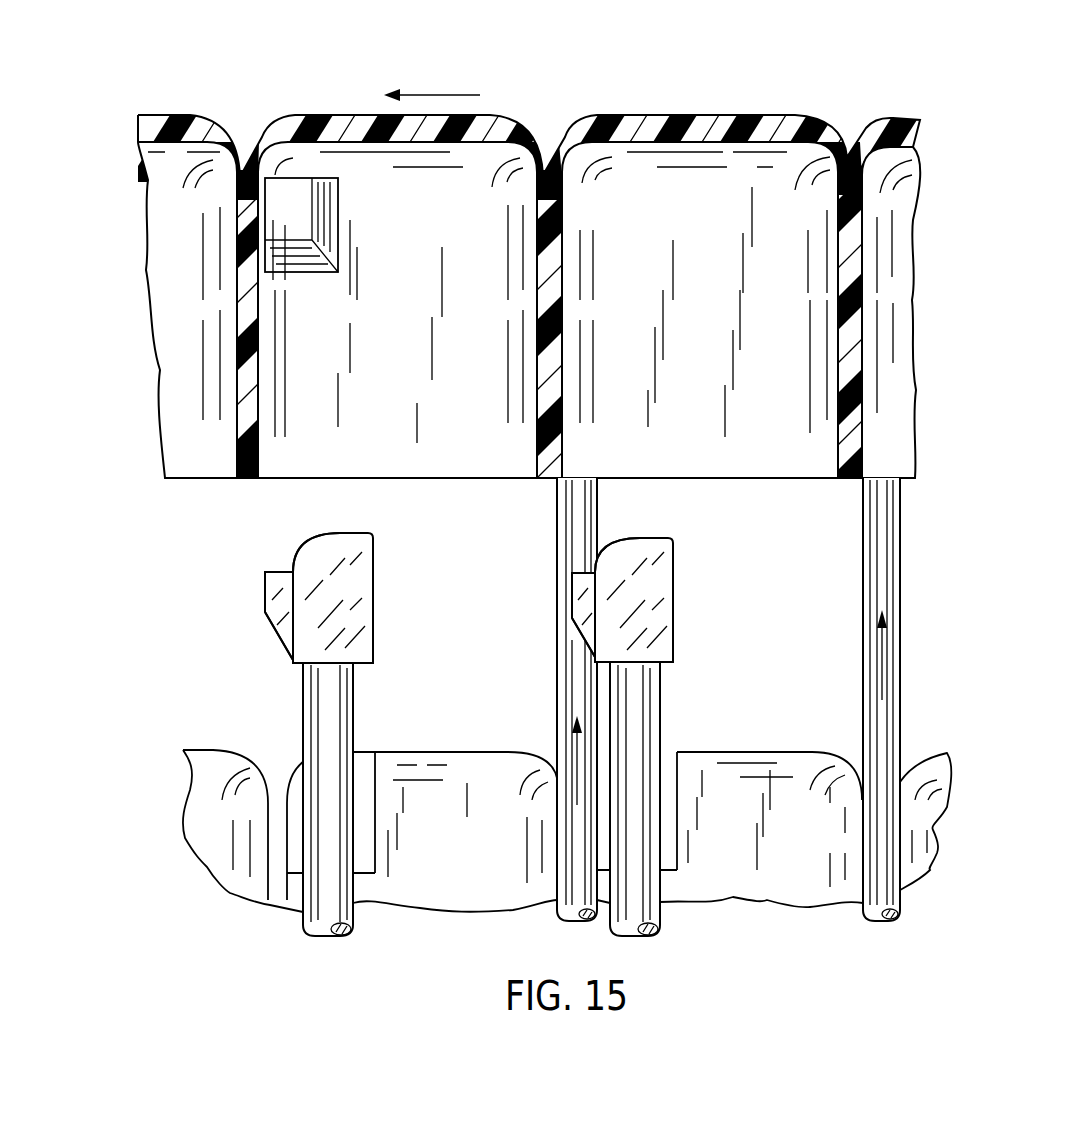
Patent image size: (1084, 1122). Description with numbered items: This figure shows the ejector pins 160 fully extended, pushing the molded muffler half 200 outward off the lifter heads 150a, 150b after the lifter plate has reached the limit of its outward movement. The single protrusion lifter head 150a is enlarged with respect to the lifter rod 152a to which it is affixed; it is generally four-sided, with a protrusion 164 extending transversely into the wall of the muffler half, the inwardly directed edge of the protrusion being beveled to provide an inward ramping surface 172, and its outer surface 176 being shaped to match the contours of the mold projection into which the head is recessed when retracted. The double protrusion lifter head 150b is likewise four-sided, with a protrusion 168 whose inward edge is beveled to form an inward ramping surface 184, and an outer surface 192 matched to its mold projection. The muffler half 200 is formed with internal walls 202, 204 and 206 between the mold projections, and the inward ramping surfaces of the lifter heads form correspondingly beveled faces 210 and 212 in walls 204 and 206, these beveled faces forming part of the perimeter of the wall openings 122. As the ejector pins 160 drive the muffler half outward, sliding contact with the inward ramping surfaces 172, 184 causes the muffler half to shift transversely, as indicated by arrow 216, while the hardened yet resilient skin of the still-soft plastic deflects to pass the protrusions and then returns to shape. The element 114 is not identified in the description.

The muffler half 200 is at (134, 116).
The arrow 216 is at (432, 82).
The wall openings 122 is at (236, 199).
The frame member 114 is at (240, 223).
The beveled face 210 is at (553, 258).
The internal wall 206 is at (410, 373).
The internal wall 204 is at (565, 448).
The internal wall 202 is at (258, 442).
The beveled face 212 is at (299, 274).
The ejector pins 160 is at (557, 507).
The double protrusion lifter head 150b is at (342, 719).
The protrusion 168 is at (265, 578).
The inward ramping surface 184 is at (278, 640).
The outer surface 192 is at (333, 533).
The lifter rod 152a is at (660, 724).
The single protrusion lifter head 150a is at (630, 592).
The protrusion 164 is at (571, 592).
The inward ramping surface 172 is at (580, 632).
The outer surface 176 is at (645, 540).